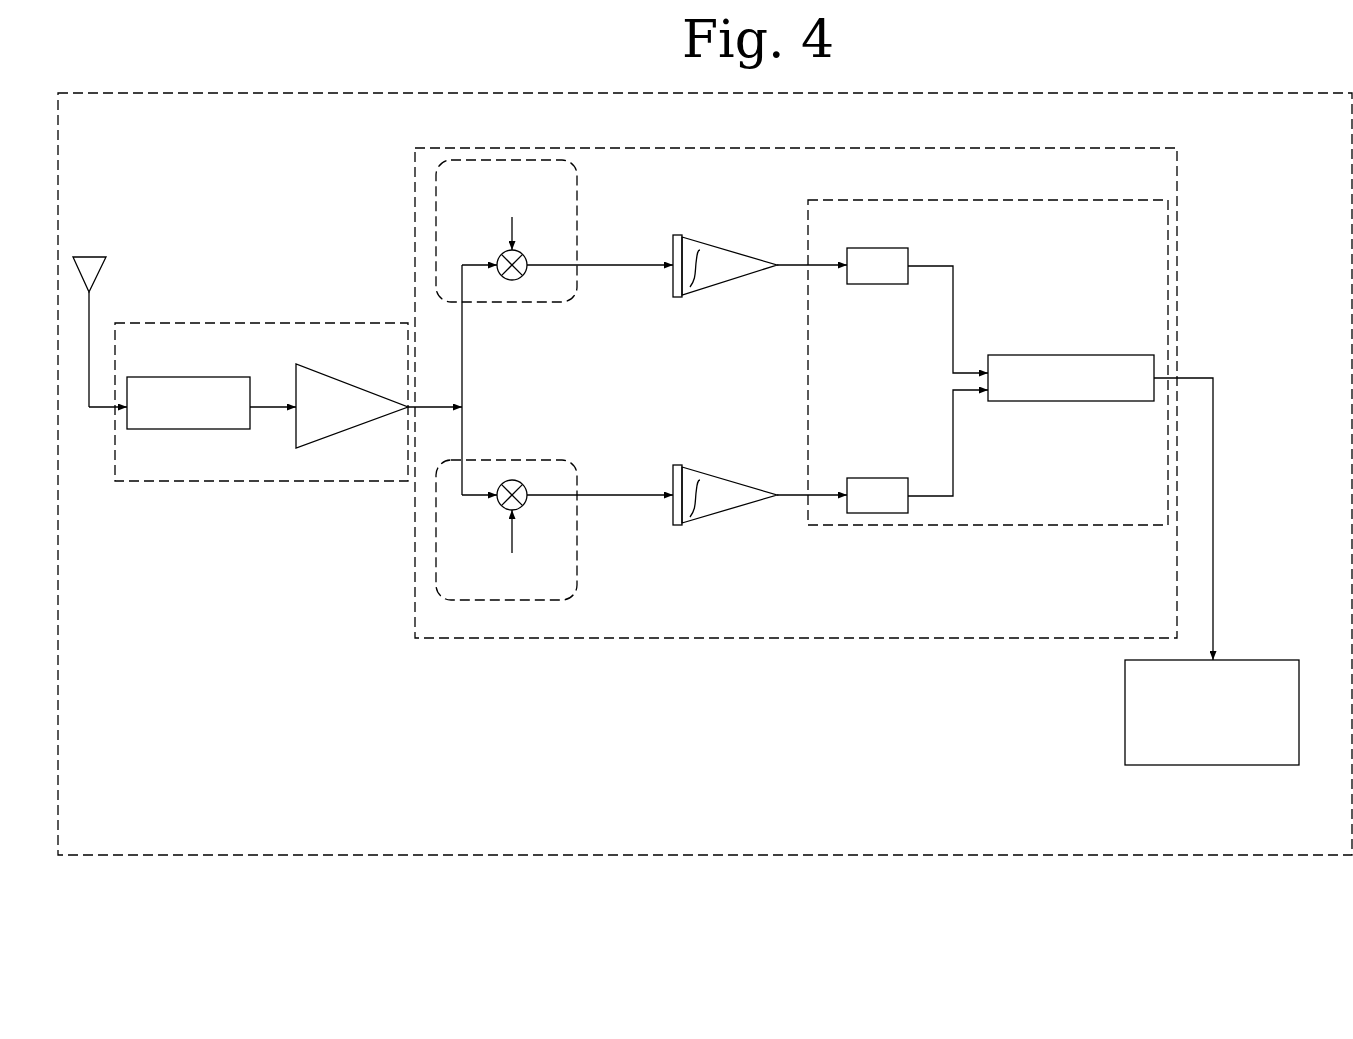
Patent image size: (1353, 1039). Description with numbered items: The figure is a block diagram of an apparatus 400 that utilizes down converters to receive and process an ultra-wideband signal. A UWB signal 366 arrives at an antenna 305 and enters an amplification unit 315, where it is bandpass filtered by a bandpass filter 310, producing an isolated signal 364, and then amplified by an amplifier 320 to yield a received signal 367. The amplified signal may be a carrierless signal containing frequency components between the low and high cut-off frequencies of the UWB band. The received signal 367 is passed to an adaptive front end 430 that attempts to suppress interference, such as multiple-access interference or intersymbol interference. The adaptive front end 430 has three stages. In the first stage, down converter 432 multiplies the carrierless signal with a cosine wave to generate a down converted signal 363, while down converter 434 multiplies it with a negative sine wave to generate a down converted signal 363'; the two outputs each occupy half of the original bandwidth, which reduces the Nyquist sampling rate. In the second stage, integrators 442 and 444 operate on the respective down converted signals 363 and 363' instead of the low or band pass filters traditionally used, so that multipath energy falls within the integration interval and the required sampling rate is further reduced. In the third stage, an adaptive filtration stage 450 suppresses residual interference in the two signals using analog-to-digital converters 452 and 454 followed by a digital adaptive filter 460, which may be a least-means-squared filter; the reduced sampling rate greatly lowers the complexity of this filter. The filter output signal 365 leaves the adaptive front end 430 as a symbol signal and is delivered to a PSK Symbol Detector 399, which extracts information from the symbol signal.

The apparatus 400 is at (705, 474).
The antenna 305 is at (92, 321).
The UWB signal 366 is at (105, 439).
The bandpass filter 310 is at (188, 391).
The amplification unit 315 is at (261, 402).
The isolated signal 364 is at (273, 439).
The amplifier 320 is at (352, 406).
The received signal 367 is at (470, 380).
The adaptive front end 430 is at (796, 393).
The down converter 432 is at (506, 247).
The down converter 434 is at (506, 516).
The integrator 442 is at (687, 276).
The integrator 444 is at (687, 488).
The adaptive filtration stage 450 is at (988, 362).
The analog-to-digital converter 452 is at (877, 283).
The analog-to-digital converter 454 is at (877, 483).
The down converted signal 363 is at (960, 319).
The down converted signal 363' is at (963, 443).
The digital adaptive filter 460 is at (1072, 365).
The adaptive filter output signal 365 is at (1217, 519).
The PSK Symbol Detector 399 is at (1213, 701).